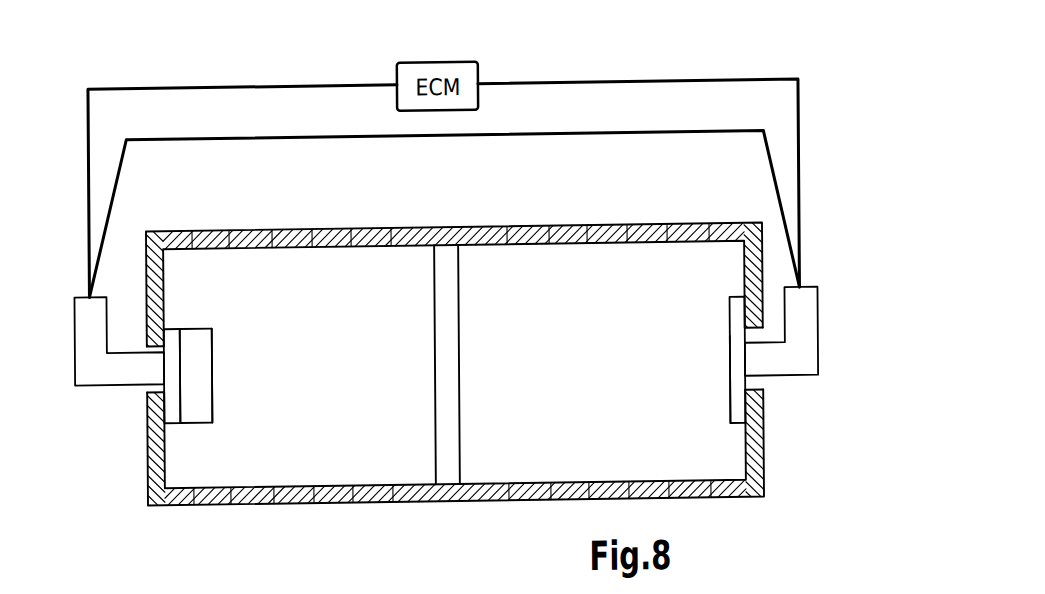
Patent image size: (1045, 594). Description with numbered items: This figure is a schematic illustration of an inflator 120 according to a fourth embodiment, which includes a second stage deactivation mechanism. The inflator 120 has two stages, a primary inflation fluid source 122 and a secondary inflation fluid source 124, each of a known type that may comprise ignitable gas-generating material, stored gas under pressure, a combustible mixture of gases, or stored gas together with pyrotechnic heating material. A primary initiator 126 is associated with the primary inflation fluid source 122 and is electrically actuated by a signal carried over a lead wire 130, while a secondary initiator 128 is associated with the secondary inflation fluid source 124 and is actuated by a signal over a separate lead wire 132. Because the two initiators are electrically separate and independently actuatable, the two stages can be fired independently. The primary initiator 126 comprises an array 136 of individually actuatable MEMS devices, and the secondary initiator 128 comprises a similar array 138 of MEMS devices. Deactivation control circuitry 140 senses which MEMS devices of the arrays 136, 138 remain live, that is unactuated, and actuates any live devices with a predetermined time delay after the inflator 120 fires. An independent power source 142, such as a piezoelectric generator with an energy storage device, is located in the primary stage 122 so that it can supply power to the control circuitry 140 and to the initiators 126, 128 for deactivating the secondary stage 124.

The inflator 120 is at (100, 456).
The primary inflation fluid source 122 is at (365, 322).
The secondary inflation fluid source 124 is at (538, 329).
The primary initiator 126 is at (193, 324).
The secondary initiator 128 is at (735, 327).
The lead wire 130 is at (87, 125).
The lead wire 132 is at (802, 105).
The array of MEMS devices 136 is at (212, 369).
The array of MEMS devices 138 is at (730, 377).
The deactivation control circuitry 140 is at (797, 372).
The independent power source 142 is at (170, 316).